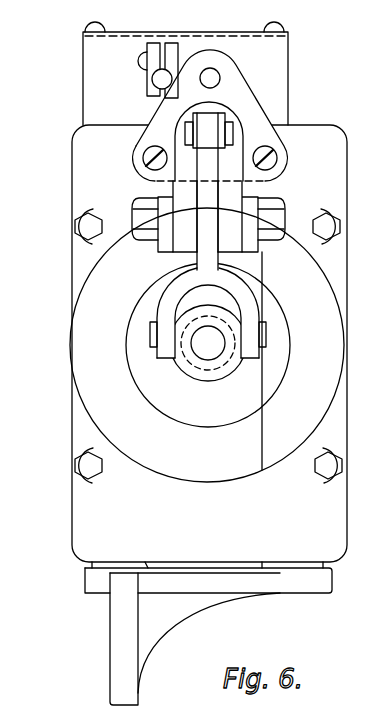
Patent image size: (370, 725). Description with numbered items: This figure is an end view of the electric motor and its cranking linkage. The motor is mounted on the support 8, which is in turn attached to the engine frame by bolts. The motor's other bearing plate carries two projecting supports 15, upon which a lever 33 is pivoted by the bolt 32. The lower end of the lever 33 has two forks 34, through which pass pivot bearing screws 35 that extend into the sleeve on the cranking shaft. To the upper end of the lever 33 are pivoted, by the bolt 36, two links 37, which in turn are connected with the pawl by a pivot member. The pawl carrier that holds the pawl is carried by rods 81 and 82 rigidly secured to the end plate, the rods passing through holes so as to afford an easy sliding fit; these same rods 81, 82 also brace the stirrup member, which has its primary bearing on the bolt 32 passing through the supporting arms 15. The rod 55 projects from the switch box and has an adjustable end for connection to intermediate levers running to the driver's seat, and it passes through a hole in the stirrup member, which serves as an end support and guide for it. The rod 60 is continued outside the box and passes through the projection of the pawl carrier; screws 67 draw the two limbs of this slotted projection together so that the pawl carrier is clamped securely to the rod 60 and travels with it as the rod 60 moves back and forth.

The support 8 is at (290, 590).
The projecting supports 15 is at (208, 216).
The bolt 32 is at (287, 218).
The lever 33 is at (207, 191).
The forks 34 is at (263, 348).
The pivot bearing screws 35 is at (270, 343).
The bolt 36 is at (176, 130).
The links 37 is at (224, 117).
The rod 55 is at (214, 69).
The rod 60 is at (153, 80).
The screws 67 is at (139, 58).
The rod 81 is at (279, 156).
The rod 82 is at (143, 158).